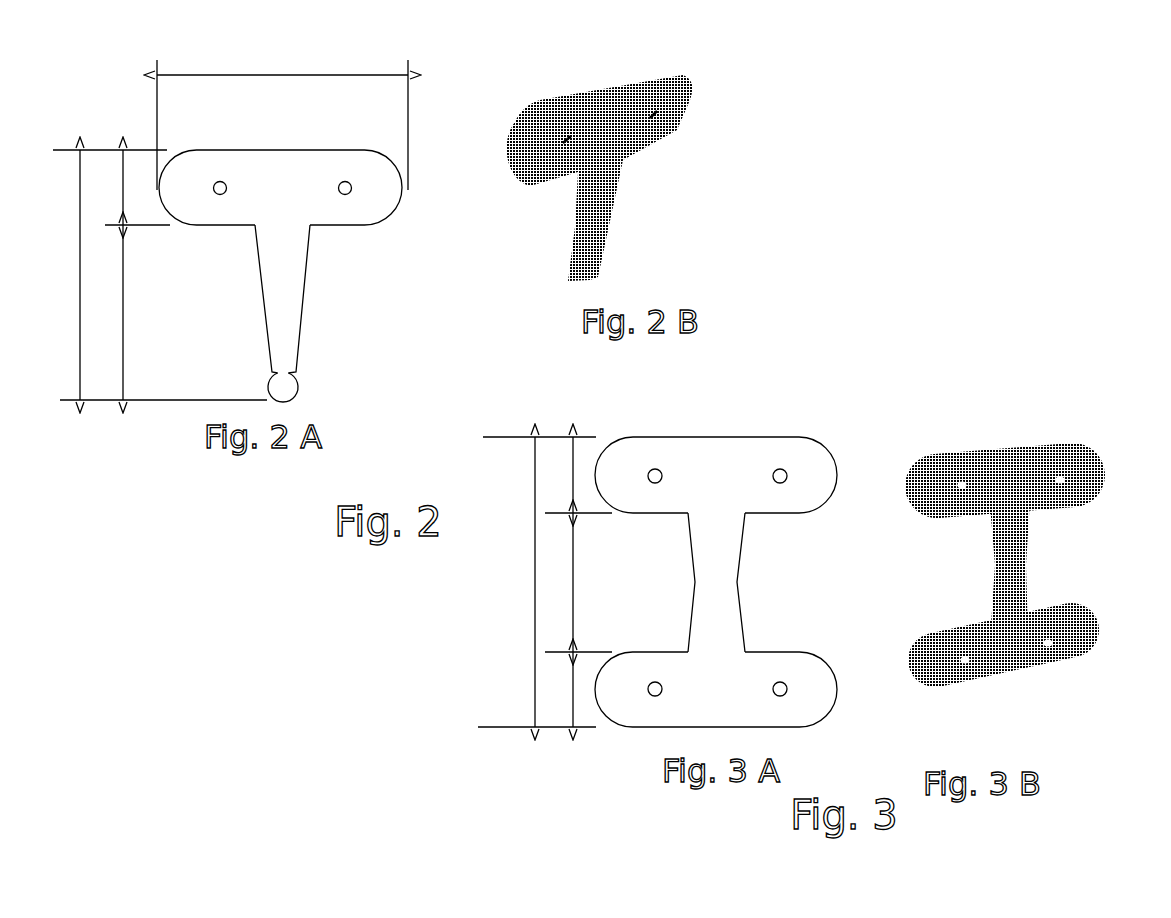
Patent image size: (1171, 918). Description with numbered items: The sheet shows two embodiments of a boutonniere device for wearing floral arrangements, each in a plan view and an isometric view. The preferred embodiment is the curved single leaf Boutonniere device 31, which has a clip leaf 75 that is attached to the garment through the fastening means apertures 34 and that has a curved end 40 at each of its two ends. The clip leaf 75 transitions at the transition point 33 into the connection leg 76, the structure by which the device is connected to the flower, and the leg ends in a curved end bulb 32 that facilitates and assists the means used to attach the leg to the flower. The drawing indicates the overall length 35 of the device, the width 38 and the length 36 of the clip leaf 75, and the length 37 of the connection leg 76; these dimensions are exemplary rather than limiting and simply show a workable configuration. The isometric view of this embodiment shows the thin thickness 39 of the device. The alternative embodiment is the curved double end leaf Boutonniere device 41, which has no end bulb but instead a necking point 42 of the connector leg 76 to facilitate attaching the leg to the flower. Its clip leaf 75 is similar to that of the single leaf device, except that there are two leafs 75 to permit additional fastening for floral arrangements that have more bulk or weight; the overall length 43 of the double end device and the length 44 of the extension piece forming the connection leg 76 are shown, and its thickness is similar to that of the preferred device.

In FIG. 2A, the curved single leaf Boutonniere device 31 is at (314, 264).
In FIG. 2B, the curved single leaf Boutonniere device 31 is at (597, 178).
In FIG. 2A, the curved end bulb 32 is at (300, 390).
In FIG. 2A, the transition point 33 is at (248, 299).
In FIG. 2A, the fastening means aperture 34 is at (343, 182).
In FIG. 3A, the fastening means aperture 34 is at (650, 468).
In FIG. 2A, the overall length of device 35 is at (160, 275).
In FIG. 2A, the length of clip leaf 36 is at (135, 187).
In FIG. 3A, the length of clip leaf 36 is at (578, 582).
In FIG. 2A, the length of connection leg 37 is at (112, 312).
In FIG. 2A, the width of clip leaf 38 is at (282, 121).
In FIG. 2B, the thickness of device 39 is at (515, 122).
In FIG. 2A, the curved end 40 is at (314, 215).
In FIG. 3A, the curved end 40 is at (730, 580).
In FIG. 3A, the curved double end leaf Boutonniere device 41 is at (730, 580).
In FIG. 3B, the curved double end leaf Boutonniere device 41 is at (1043, 707).
In FIG. 3A, the necking point 42 is at (741, 582).
In FIG. 3A, the overall length of double end device 43 is at (537, 582).
In FIG. 3A, the length of extension piece for the connection leg 44 is at (562, 582).
In FIG. 2A, the clip leaf 75 is at (237, 203).
In FIG. 3A, the clip leaf 75 is at (696, 458).
In FIG. 2A, the connection leg 76 is at (280, 278).
In FIG. 3A, the connection leg 76 is at (708, 545).